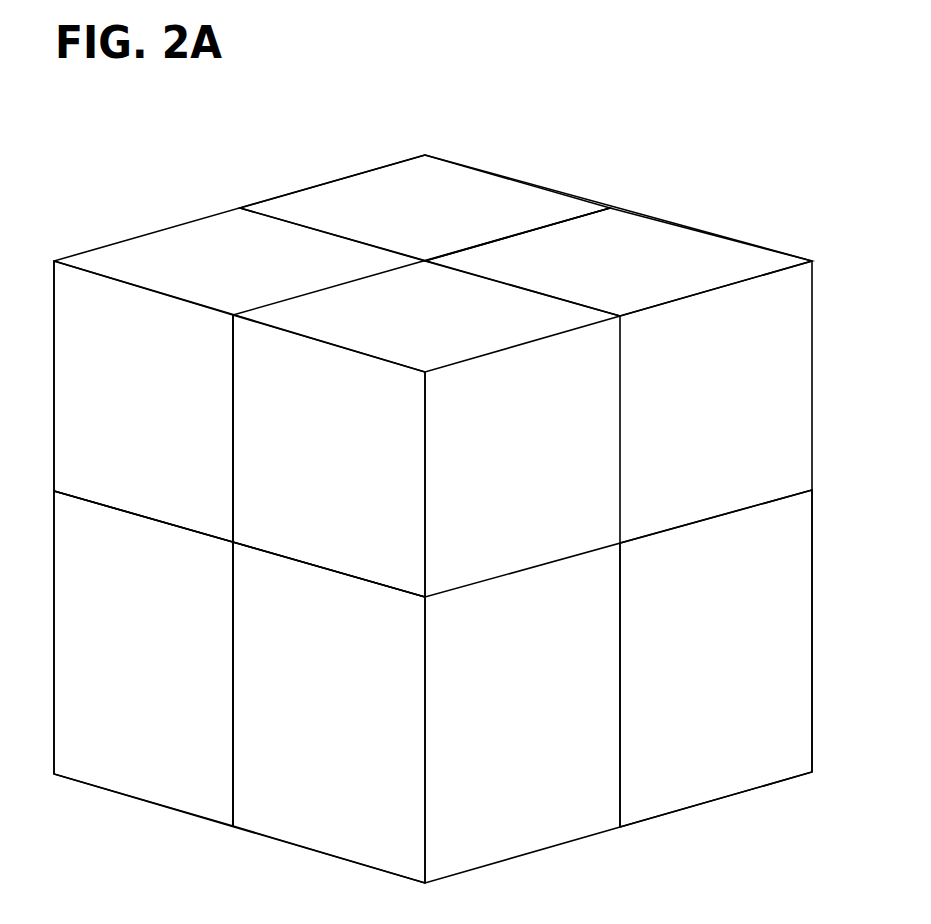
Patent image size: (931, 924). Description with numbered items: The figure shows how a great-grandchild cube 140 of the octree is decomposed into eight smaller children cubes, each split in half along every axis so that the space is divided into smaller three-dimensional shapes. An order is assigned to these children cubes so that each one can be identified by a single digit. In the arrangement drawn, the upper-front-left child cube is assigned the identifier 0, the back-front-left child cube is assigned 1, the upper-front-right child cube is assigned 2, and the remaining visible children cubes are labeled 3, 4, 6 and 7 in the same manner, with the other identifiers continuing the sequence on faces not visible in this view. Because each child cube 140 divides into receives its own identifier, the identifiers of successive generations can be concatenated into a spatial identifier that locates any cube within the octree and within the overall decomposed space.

The great-grandchild cube 140 is at (262, 838).
The upper-front-left child cube 0 is at (143, 401).
The back-front-left child cube 1 is at (425, 208).
The upper-front-right child cube 2 is at (329, 456).
The child cube 3 is at (618, 262).
The child cube 4 is at (143, 658).
The child cube 6 is at (329, 712).
The child cube 7 is at (716, 658).